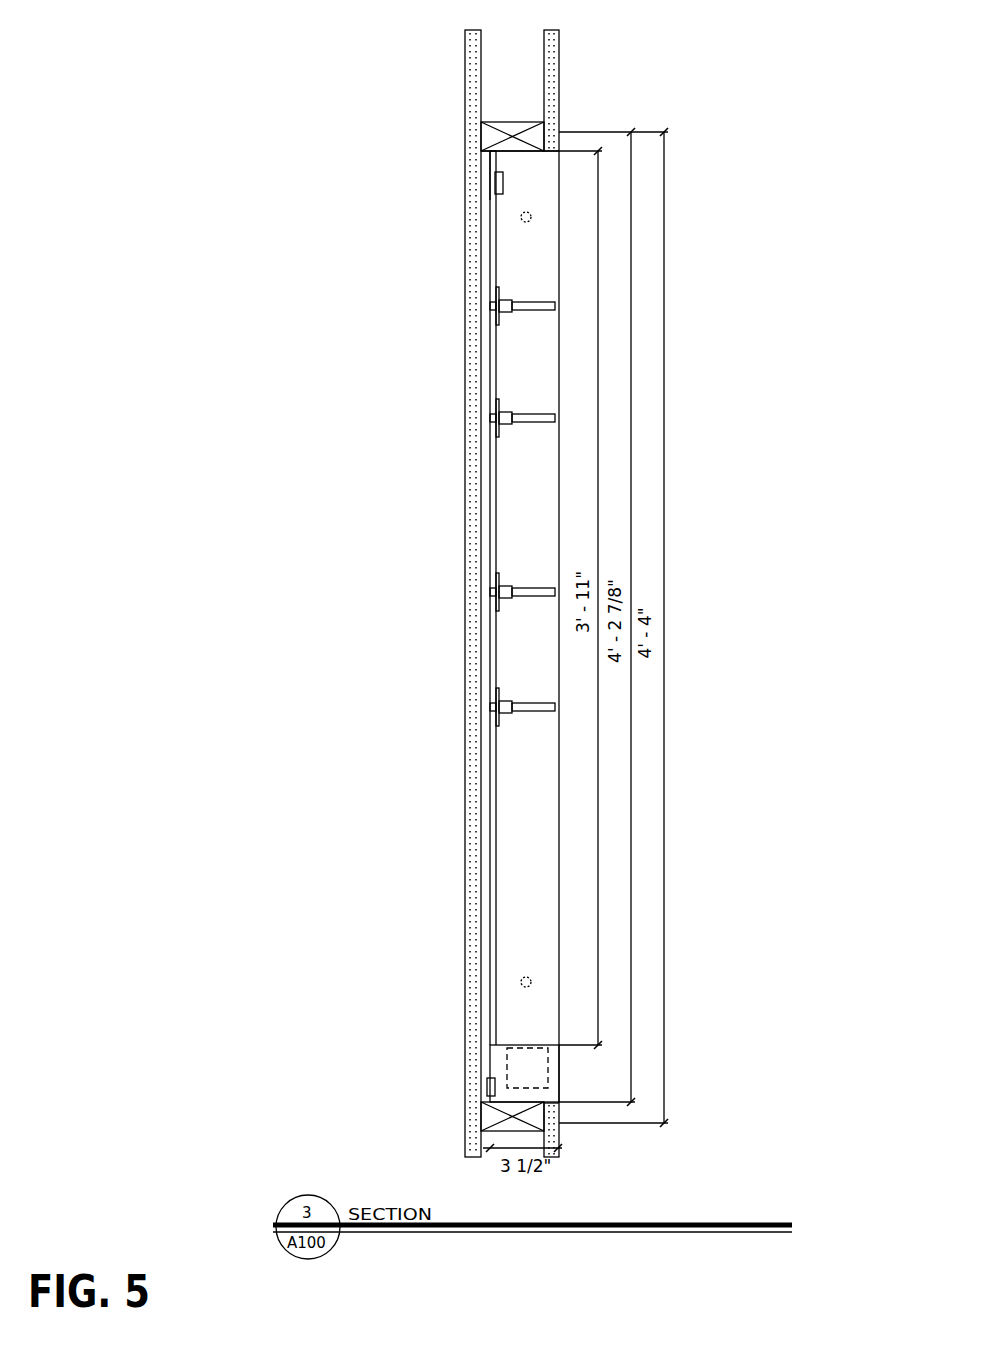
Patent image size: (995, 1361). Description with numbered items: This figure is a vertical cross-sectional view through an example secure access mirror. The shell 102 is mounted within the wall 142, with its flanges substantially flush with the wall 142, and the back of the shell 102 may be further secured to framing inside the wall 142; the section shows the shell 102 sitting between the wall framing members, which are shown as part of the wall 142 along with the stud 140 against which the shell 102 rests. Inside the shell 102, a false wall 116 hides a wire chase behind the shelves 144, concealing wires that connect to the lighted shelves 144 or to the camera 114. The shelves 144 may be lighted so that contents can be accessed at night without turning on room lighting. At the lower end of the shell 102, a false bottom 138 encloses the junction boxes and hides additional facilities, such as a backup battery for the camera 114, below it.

The shell 102 is at (481, 475).
The camera 114 is at (324, 185).
The false wall 116 is at (400, 150).
The false bottom 138 is at (550, 1045).
The wall stud 140 is at (467, 833).
The wall 142 is at (560, 62).
The shelves 144 is at (316, 306).